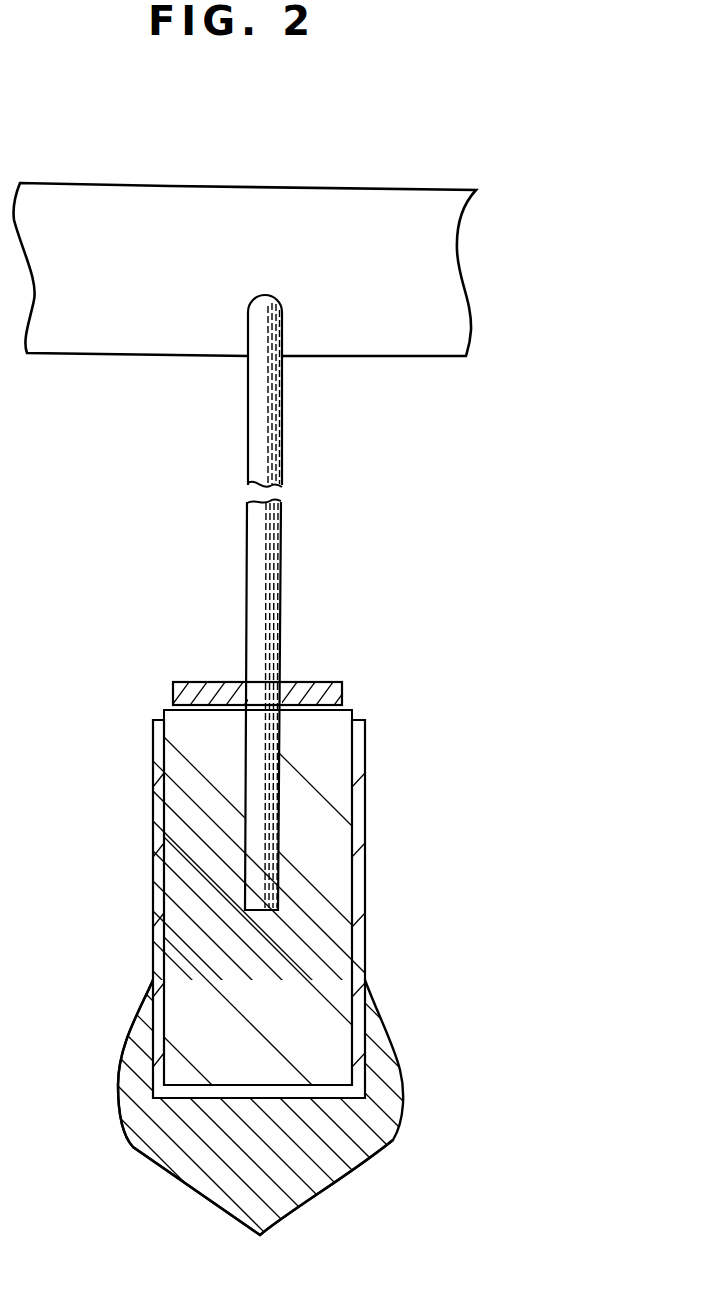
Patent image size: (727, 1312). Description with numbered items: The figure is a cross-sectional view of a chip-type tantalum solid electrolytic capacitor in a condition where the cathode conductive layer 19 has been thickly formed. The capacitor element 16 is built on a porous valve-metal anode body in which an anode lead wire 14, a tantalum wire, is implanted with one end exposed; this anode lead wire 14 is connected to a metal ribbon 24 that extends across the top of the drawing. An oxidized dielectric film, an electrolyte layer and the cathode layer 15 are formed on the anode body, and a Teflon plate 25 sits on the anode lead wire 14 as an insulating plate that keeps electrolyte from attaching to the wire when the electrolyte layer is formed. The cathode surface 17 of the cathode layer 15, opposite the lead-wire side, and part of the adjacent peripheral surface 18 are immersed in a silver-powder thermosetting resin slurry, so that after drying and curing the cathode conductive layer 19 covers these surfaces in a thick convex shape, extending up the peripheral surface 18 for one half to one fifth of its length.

The metal ribbon 24 is at (97, 340).
The anode lead wire 14 is at (247, 563).
The Teflon plate 25 is at (175, 695).
The cathode layer 15 is at (157, 762).
The capacitor element 16 is at (337, 915).
The cathode surface 17 is at (193, 1103).
The peripheral surface 18 is at (150, 1028).
The cathode conductive layer 19 is at (190, 1157).